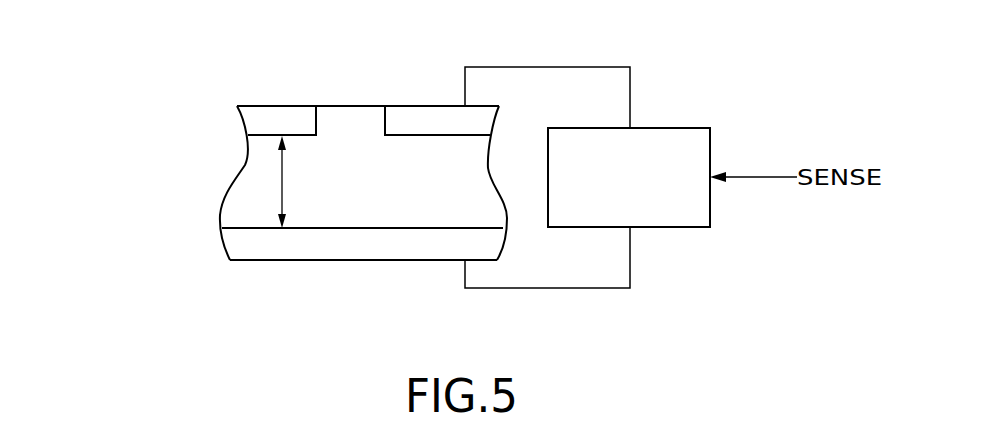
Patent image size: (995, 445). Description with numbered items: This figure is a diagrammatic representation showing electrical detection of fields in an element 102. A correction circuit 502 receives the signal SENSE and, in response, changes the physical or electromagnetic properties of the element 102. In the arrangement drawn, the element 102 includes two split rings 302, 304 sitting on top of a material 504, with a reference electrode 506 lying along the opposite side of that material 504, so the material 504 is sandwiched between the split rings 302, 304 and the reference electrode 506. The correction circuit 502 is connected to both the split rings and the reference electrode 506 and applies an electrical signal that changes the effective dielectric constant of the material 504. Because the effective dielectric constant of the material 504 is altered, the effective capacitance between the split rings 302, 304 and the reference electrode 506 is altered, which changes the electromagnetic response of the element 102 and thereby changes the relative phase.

The element 102 is at (156, 199).
The split ring 302 is at (277, 106).
The split ring 304 is at (427, 106).
The correction circuit 502 is at (668, 128).
The material 504 is at (253, 173).
The reference electrode 506 is at (257, 248).